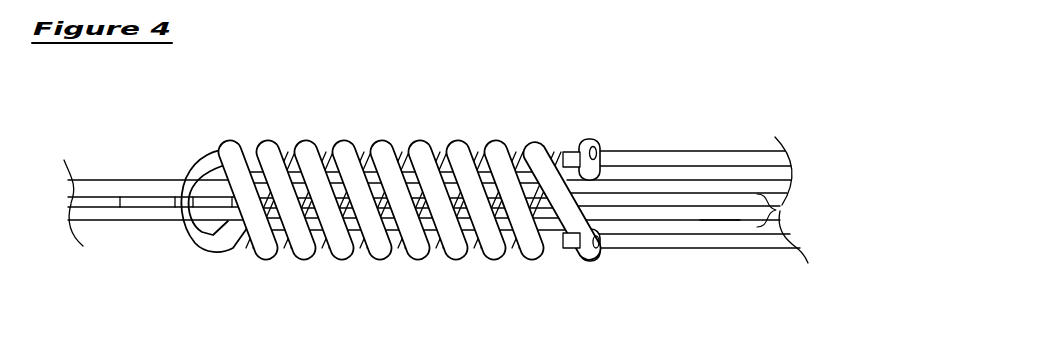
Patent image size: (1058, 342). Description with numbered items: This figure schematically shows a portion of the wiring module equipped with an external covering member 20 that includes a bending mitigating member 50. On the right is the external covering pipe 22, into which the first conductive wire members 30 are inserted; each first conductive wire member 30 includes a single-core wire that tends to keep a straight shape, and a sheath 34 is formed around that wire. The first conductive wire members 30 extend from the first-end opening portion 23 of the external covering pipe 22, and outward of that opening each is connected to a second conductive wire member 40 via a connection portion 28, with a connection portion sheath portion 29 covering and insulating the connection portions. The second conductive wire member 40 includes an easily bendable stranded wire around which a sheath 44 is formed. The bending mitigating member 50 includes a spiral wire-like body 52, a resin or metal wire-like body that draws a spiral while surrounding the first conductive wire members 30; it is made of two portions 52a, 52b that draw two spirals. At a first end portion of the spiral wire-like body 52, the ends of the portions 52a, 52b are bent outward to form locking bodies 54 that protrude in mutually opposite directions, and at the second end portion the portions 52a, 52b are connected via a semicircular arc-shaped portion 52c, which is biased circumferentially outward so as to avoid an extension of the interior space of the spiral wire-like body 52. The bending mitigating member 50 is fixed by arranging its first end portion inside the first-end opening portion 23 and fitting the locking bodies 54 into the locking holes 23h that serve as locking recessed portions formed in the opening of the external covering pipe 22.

The wiring module equipped with an external covering member 20 is at (577, 176).
The external covering pipe 22 is at (677, 149).
The first-end opening portion 23 is at (566, 150).
The locking hole 23h is at (598, 149).
The connection portion 28 is at (407, 203).
The connection portion sheath portion 29 is at (432, 227).
The first conductive wire member 30 is at (776, 210).
The sheath 34 is at (730, 193).
The second conductive wire member 40 is at (157, 214).
The sheath 44 is at (144, 213).
The bending mitigating member 50 is at (355, 181).
The spiral wire-like body 52 is at (345, 251).
The portion drawing a spiral 52a is at (240, 163).
The portion drawing a spiral 52b is at (270, 155).
The semicircular arc-shaped portion 52c is at (187, 165).
The locking body 54 is at (572, 150).